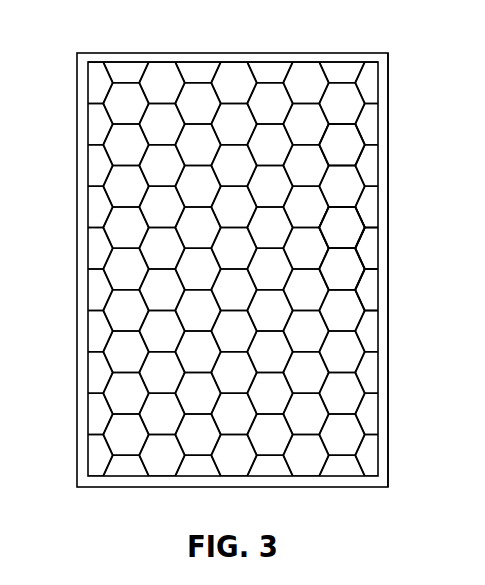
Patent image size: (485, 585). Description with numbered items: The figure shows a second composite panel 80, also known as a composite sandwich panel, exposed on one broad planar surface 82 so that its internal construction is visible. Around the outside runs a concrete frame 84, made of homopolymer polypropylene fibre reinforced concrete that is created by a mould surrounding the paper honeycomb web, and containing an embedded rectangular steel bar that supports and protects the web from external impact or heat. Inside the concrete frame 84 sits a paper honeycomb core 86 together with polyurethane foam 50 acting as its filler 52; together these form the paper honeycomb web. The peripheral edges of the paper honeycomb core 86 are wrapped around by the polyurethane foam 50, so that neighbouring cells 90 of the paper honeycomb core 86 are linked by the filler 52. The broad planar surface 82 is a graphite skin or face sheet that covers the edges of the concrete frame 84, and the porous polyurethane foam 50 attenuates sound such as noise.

The second composite panel 80 is at (75, 372).
The broad planar surface 82 is at (162, 63).
The concrete frame 84 is at (389, 392).
The paper honeycomb core 86 is at (361, 134).
The filler 52 is at (352, 220).
The polyurethane foam 50 is at (342, 227).
The cells 90 is at (348, 275).